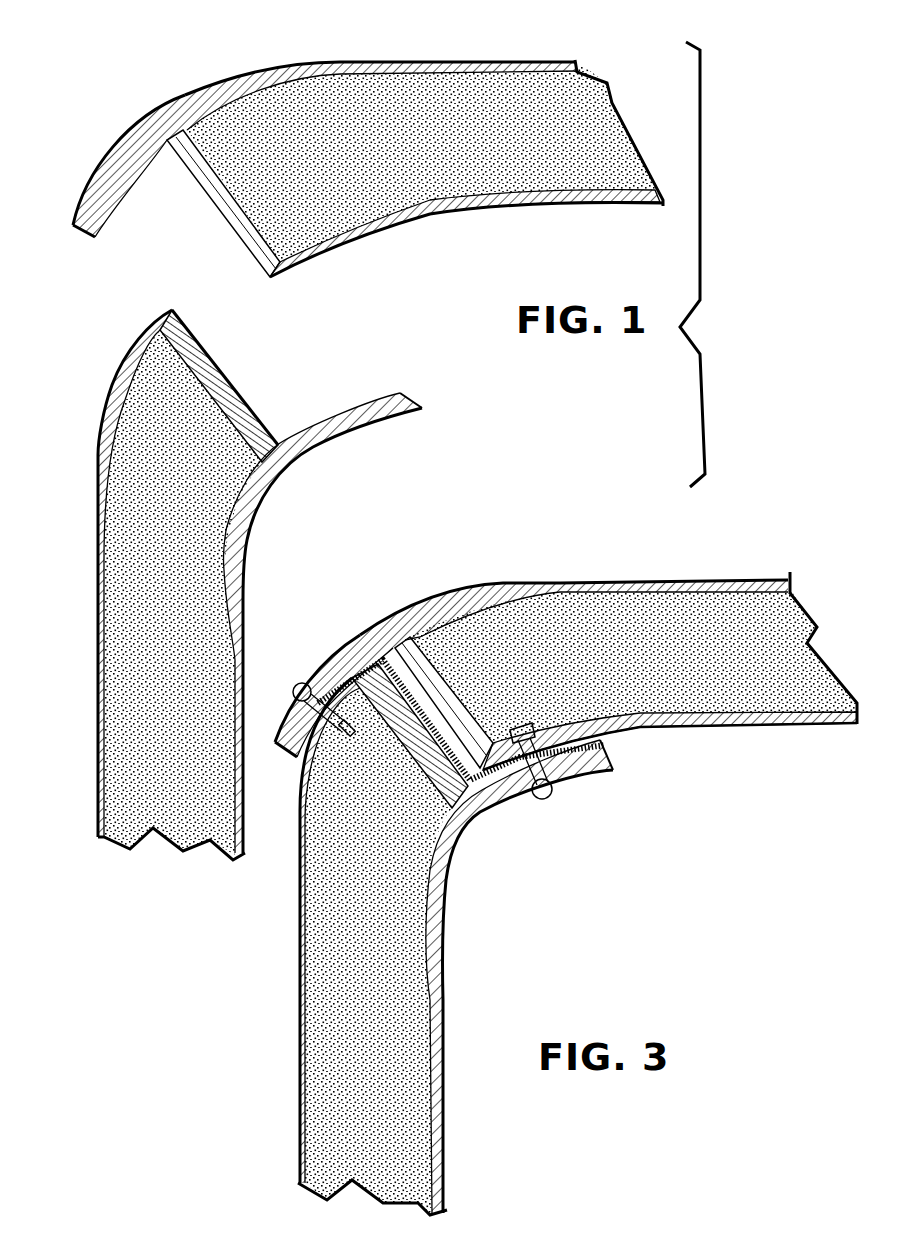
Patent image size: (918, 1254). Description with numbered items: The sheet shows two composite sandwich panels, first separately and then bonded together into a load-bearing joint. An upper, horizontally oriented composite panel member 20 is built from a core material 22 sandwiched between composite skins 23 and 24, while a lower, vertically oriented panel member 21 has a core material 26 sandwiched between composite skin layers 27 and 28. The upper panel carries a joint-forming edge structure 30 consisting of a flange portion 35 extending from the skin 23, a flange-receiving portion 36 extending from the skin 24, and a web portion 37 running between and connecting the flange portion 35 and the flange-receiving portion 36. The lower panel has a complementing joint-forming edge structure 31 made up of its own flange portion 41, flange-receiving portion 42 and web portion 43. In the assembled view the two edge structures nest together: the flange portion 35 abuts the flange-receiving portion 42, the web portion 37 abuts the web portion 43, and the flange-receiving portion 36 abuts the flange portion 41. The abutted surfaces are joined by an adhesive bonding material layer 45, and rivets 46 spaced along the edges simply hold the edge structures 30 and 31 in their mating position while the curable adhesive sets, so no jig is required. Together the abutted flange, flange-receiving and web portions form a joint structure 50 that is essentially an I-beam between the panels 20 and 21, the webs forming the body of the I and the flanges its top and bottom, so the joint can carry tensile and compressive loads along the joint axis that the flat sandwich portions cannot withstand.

In FIG. 1, the composite panel member 20 is at (368, 154).
In FIG. 3, the composite panel member 20 is at (566, 683).
In FIG. 1, the panel member 21 is at (153, 603).
In FIG. 3, the panel member 21 is at (352, 956).
In FIG. 3, the core material 22 is at (677, 685).
In FIG. 1, the skin 23 is at (497, 62).
In FIG. 3, the skin 23 is at (672, 580).
In FIG. 1, the skin 24 is at (587, 203).
In FIG. 3, the skin 24 is at (670, 741).
In FIG. 1, the core material 26 is at (185, 800).
In FIG. 3, the core material 26 is at (370, 1140).
In FIG. 1, the skin layer 27 is at (100, 750).
In FIG. 3, the skin layer 27 is at (297, 1137).
In FIG. 1, the skin layer 28 is at (237, 672).
In FIG. 3, the skin layer 28 is at (443, 1130).
In FIG. 1, the joint-forming edge structure 30 is at (348, 172).
In FIG. 3, the joint-forming edge structure 30 is at (566, 645).
In FIG. 1, the complementing joint-forming edge structure 31 is at (229, 581).
In FIG. 3, the complementing joint-forming edge structure 31 is at (476, 938).
In FIG. 1, the flange portion 35 is at (87, 192).
In FIG. 3, the flange portion 35 is at (323, 663).
In FIG. 1, the flange-receiving portion 36 is at (383, 223).
In FIG. 3, the flange-receiving portion 36 is at (617, 735).
In FIG. 1, the web portion 37 is at (220, 193).
In FIG. 3, the web portion 37 is at (437, 718).
In FIG. 1, the flange portion 41 is at (327, 430).
In FIG. 3, the flange portion 41 is at (587, 772).
In FIG. 1, the flange-receiving portion 42 is at (100, 412).
In FIG. 3, the flange-receiving portion 42 is at (325, 780).
In FIG. 1, the web portion 43 is at (233, 378).
In FIG. 3, the web portion 43 is at (405, 763).
In FIG. 3, the adhesive bonding material layer 45 is at (410, 672).
In FIG. 3, the rivets 46 is at (300, 684).
In FIG. 3, the joint structure 50 is at (447, 763).